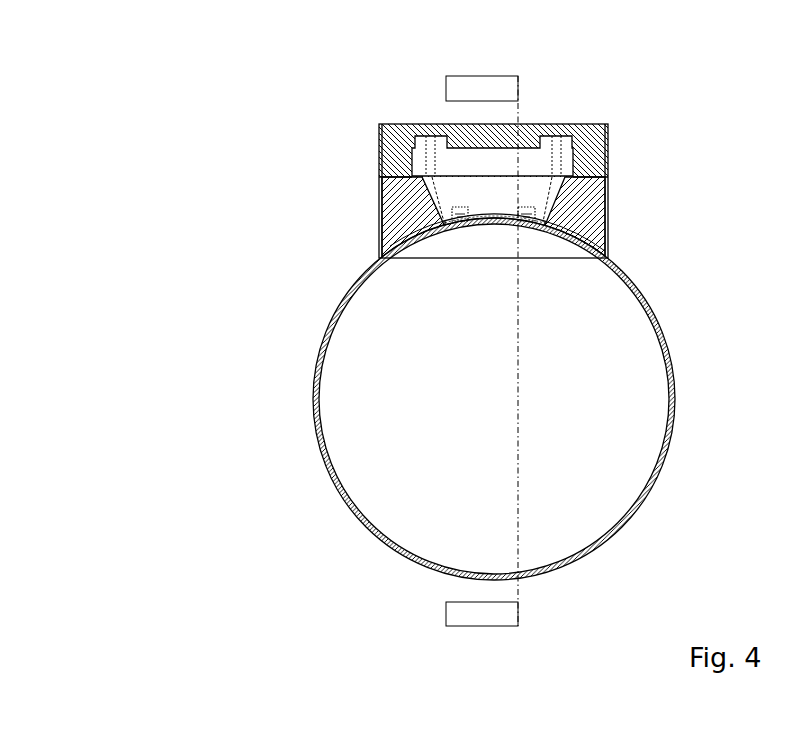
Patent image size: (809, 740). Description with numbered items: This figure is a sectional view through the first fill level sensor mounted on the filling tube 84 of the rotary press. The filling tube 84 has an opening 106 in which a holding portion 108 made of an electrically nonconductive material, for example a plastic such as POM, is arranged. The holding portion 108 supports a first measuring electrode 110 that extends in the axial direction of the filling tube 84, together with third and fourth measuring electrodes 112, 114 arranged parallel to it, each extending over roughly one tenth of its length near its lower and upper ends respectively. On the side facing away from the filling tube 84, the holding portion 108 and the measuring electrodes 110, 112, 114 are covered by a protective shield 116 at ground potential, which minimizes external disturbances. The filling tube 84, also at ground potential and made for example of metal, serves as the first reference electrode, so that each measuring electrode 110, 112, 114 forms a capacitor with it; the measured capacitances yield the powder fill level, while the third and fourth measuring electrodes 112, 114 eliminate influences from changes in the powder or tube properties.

The filling tube 84 is at (667, 357).
The opening 106 is at (422, 237).
The holding portion 108 is at (587, 212).
The first measuring electrode 110 is at (541, 220).
The third measuring electrode 112 is at (444, 222).
The fourth measuring electrode 114 is at (526, 214).
The protective shield 116 is at (595, 138).